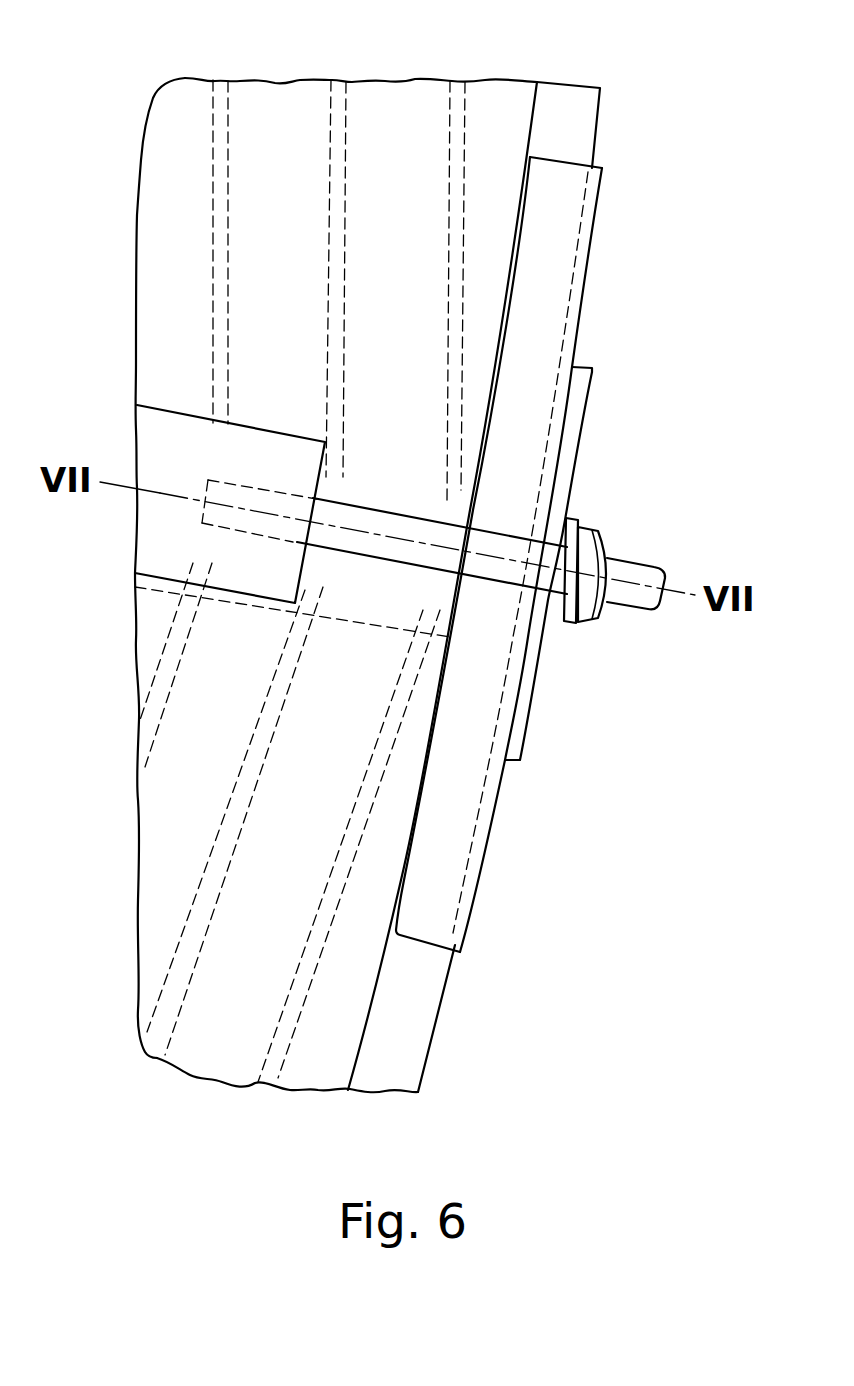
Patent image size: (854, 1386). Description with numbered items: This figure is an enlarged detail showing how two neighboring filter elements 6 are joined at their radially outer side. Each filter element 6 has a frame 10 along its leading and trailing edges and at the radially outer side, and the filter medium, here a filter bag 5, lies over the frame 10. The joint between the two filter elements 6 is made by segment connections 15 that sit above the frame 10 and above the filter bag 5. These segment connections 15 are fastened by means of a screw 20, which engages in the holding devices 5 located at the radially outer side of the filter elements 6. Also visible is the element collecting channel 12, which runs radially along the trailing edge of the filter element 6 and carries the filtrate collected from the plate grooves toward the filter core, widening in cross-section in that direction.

The filter bag 5 is at (243, 577).
The filter element 6 is at (160, 213).
The frame 10 is at (568, 93).
The element collecting channel 12 is at (433, 588).
The segment connection 15 is at (499, 554).
The screw 20 is at (582, 567).